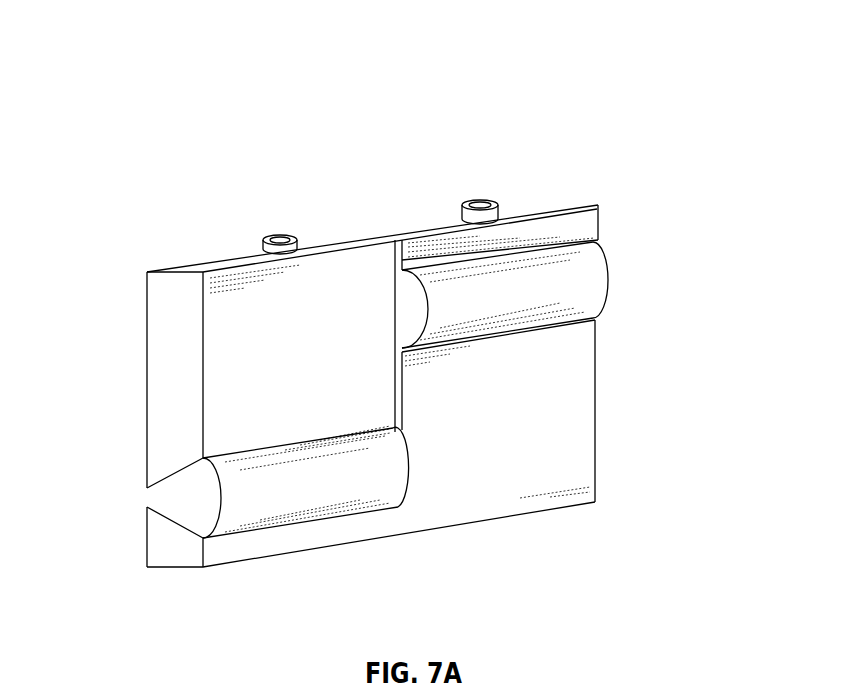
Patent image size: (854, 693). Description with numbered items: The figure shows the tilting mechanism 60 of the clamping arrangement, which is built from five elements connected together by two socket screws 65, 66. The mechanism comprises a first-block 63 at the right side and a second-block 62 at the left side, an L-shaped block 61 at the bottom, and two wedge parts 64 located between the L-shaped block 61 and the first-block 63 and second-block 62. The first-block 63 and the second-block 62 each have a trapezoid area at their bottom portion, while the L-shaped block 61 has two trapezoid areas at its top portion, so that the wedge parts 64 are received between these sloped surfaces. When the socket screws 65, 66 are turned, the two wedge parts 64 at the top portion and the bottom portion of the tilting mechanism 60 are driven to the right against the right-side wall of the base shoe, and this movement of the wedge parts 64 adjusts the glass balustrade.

The tilting mechanism 60 is at (619, 127).
The L-shaped block 61 is at (572, 422).
The second-block 62 is at (223, 308).
The first-block 63 is at (600, 210).
The wedge part 64 is at (590, 279).
The socket screw 65 is at (480, 199).
The socket screw 66 is at (279, 236).